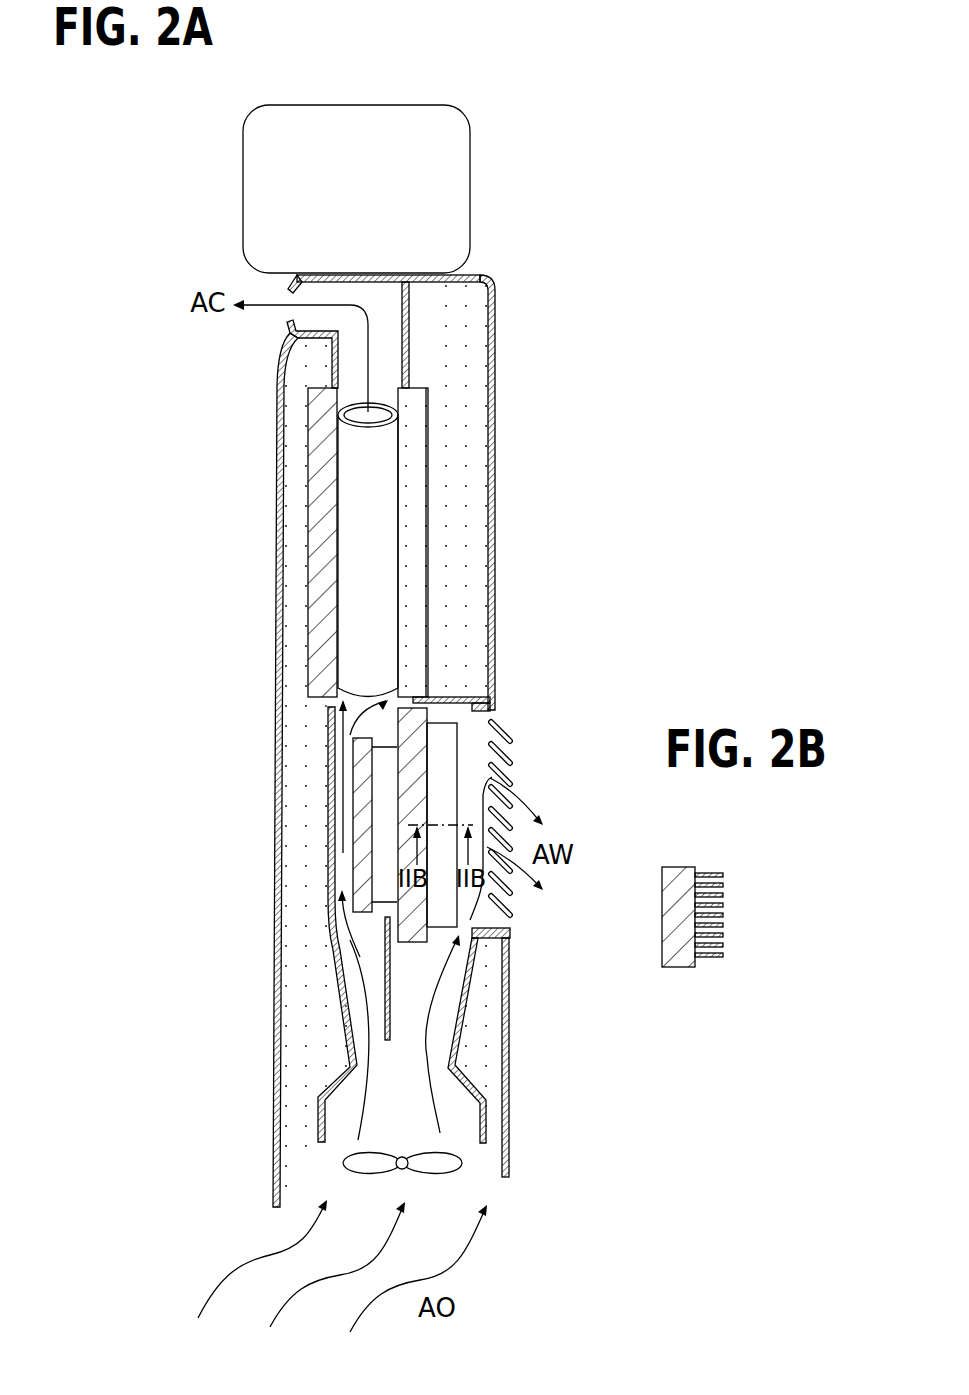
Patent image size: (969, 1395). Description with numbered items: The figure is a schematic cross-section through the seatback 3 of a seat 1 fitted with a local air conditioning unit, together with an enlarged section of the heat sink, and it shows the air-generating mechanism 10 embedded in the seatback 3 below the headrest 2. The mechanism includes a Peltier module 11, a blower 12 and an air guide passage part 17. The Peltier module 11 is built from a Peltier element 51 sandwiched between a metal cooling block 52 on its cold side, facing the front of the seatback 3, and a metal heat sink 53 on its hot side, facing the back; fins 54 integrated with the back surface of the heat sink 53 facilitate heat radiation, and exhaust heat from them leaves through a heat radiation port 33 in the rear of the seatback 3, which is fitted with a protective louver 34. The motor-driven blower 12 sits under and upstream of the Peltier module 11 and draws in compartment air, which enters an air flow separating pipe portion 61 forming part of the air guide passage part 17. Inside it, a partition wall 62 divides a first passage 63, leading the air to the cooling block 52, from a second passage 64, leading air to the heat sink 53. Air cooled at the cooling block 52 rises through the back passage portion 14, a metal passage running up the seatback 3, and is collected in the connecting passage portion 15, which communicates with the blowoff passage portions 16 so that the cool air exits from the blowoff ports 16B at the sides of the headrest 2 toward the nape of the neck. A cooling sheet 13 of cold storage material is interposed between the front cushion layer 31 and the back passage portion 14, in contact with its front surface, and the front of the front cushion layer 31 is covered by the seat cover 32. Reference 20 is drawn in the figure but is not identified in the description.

In FIG. 2A, the seat 1 is at (645, 230).
In FIG. 2A, the headrest 2 is at (435, 188).
In FIG. 2A, the seatback 3 is at (460, 355).
In FIG. 2A, the air-generating mechanism 10 is at (385, 489).
In FIG. 2A, the Peltier module 11 is at (463, 743).
In FIG. 2A, the blower 12 is at (453, 1167).
In FIG. 2A, the cooling sheet 13 is at (320, 497).
In FIG. 2A, the back passage portion 14 is at (372, 470).
In FIG. 2A, the connecting passage portion 15 is at (433, 300).
In FIG. 2A, the blowoff passage portions 16 is at (330, 272).
In FIG. 2A, the blowoff ports 16B is at (285, 322).
In FIG. 2A, the air guide passage part 17 is at (423, 410).
In FIG. 2A, the partition line 20 is at (415, 512).
In FIG. 2A, the front cushion layer 31 is at (303, 832).
In FIG. 2A, the seat cover 32 is at (277, 937).
In FIG. 2A, the heat radiation port 33 is at (487, 713).
In FIG. 2A, the protective louver 34 is at (503, 733).
In FIG. 2A, the Peltier element 51 is at (377, 875).
In FIG. 2A, the cooling block 52 is at (360, 787).
In FIG. 2A, the heat sink 53 is at (478, 940).
In FIG. 2B, the heat sink 53 is at (683, 878).
In FIG. 2A, the fins 54 is at (443, 770).
In FIG. 2B, the fins 54 is at (741, 873).
In FIG. 2A, the air flow separating pipe portion 61 is at (487, 1122).
In FIG. 2A, the partition wall 62 is at (380, 1018).
In FIG. 2A, the first passage 63 is at (355, 978).
In FIG. 2A, the second passage 64 is at (442, 1020).